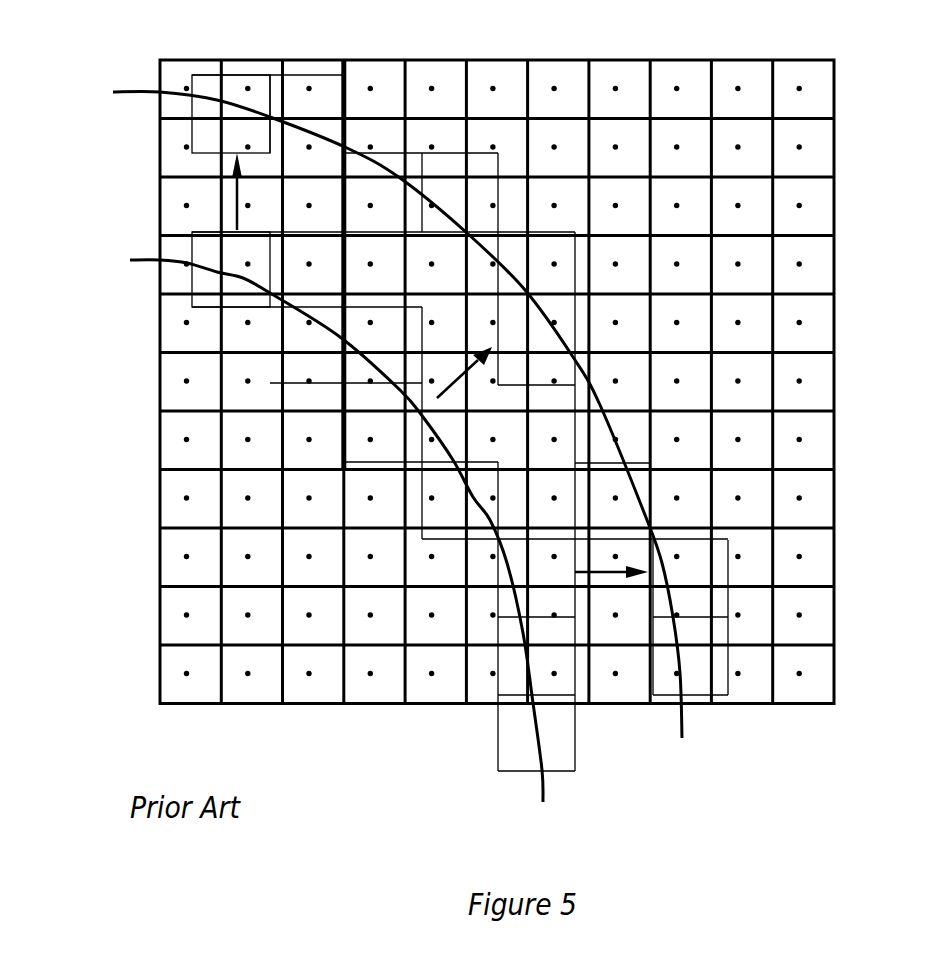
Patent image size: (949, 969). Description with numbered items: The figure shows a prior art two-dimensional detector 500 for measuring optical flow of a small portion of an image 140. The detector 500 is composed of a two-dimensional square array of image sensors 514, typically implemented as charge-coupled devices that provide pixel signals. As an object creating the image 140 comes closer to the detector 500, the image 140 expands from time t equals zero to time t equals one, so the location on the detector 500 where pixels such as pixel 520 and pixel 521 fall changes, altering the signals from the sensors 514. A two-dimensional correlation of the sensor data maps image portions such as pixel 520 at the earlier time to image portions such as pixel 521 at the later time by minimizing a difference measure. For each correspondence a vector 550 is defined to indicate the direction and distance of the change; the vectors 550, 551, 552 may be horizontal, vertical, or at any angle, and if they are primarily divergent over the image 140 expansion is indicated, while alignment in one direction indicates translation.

The two-dimensional detector 500 is at (802, 712).
The image sensor 514 is at (743, 60).
The image 140 is at (359, 438).
The pixel at time t=1 521 is at (222, 75).
The pixel at time t=0 520 is at (208, 230).
The vector 550 is at (235, 177).
The vector 551 is at (448, 383).
The vector 552 is at (605, 573).